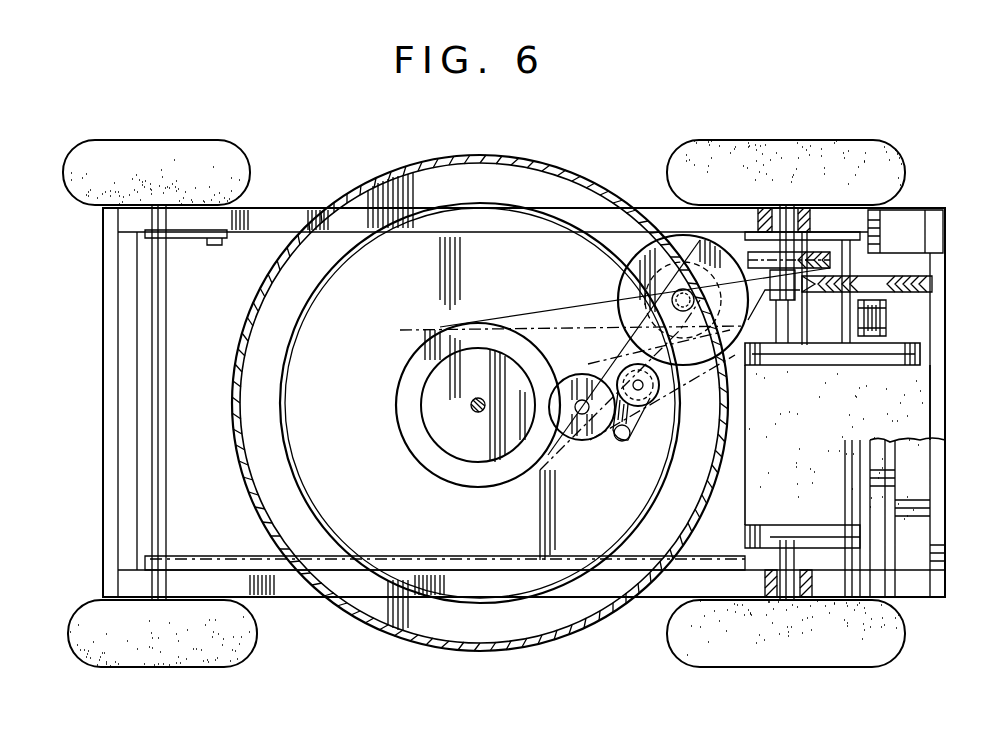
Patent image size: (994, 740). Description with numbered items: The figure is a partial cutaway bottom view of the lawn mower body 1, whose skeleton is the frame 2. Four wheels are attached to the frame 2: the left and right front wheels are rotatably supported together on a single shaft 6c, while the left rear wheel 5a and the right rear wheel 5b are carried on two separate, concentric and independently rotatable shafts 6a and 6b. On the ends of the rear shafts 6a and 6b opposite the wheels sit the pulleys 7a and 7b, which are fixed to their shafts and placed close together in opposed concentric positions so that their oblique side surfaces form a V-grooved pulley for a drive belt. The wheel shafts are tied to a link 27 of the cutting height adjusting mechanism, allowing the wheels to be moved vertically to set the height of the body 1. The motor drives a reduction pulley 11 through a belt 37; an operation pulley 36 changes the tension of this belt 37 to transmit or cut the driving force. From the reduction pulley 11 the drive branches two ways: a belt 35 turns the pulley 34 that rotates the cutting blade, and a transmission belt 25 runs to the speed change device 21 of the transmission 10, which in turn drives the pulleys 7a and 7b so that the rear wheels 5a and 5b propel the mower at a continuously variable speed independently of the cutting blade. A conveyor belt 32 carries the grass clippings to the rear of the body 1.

The lawn mower body 1 is at (98, 282).
The frame 2 is at (276, 218).
The left rear wheel 5a is at (143, 147).
The right rear wheel 5b is at (170, 667).
The left rear shaft 6a is at (790, 232).
The right rear shaft 6b is at (787, 597).
The front wheel shaft 6c is at (167, 326).
The left pulley 7a is at (752, 258).
The right pulley 7b is at (768, 289).
The transmission 10 is at (664, 225).
The reduction pulley 11 is at (700, 248).
The speed change device 21 is at (864, 272).
The transmission belt 25 is at (797, 340).
The link 27 is at (194, 240).
The conveyor belt 32 is at (934, 398).
The pulley 34 is at (418, 370).
The belt 35 is at (558, 302).
The operation pulley 36 is at (622, 380).
The belt 37 is at (572, 366).